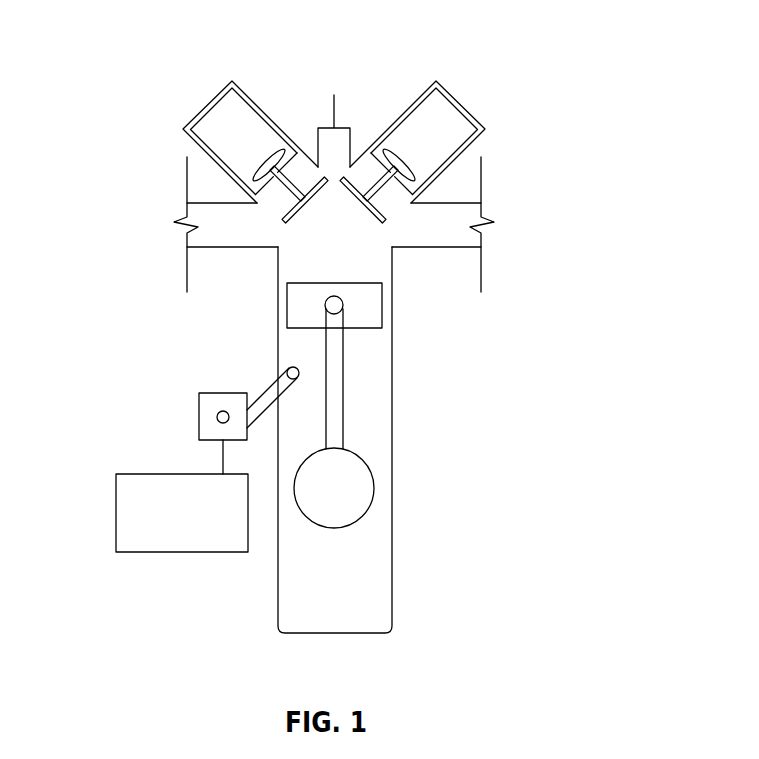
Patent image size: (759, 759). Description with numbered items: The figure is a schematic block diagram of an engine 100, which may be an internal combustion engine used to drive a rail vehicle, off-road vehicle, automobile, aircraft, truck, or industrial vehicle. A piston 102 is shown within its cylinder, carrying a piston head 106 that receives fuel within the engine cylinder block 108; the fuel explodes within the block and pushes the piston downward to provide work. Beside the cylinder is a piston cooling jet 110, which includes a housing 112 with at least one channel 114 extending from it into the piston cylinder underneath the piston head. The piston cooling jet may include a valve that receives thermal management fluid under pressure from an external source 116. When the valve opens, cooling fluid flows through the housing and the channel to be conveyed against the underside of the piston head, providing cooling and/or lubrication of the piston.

The engine 100 is at (522, 85).
The piston 102 is at (372, 302).
The piston head 106 is at (317, 284).
The engine cylinder block 108 is at (502, 150).
The piston cooling jet 110 is at (200, 393).
The housing 112 is at (222, 393).
The channel 114 is at (268, 395).
The external source 116 is at (116, 513).